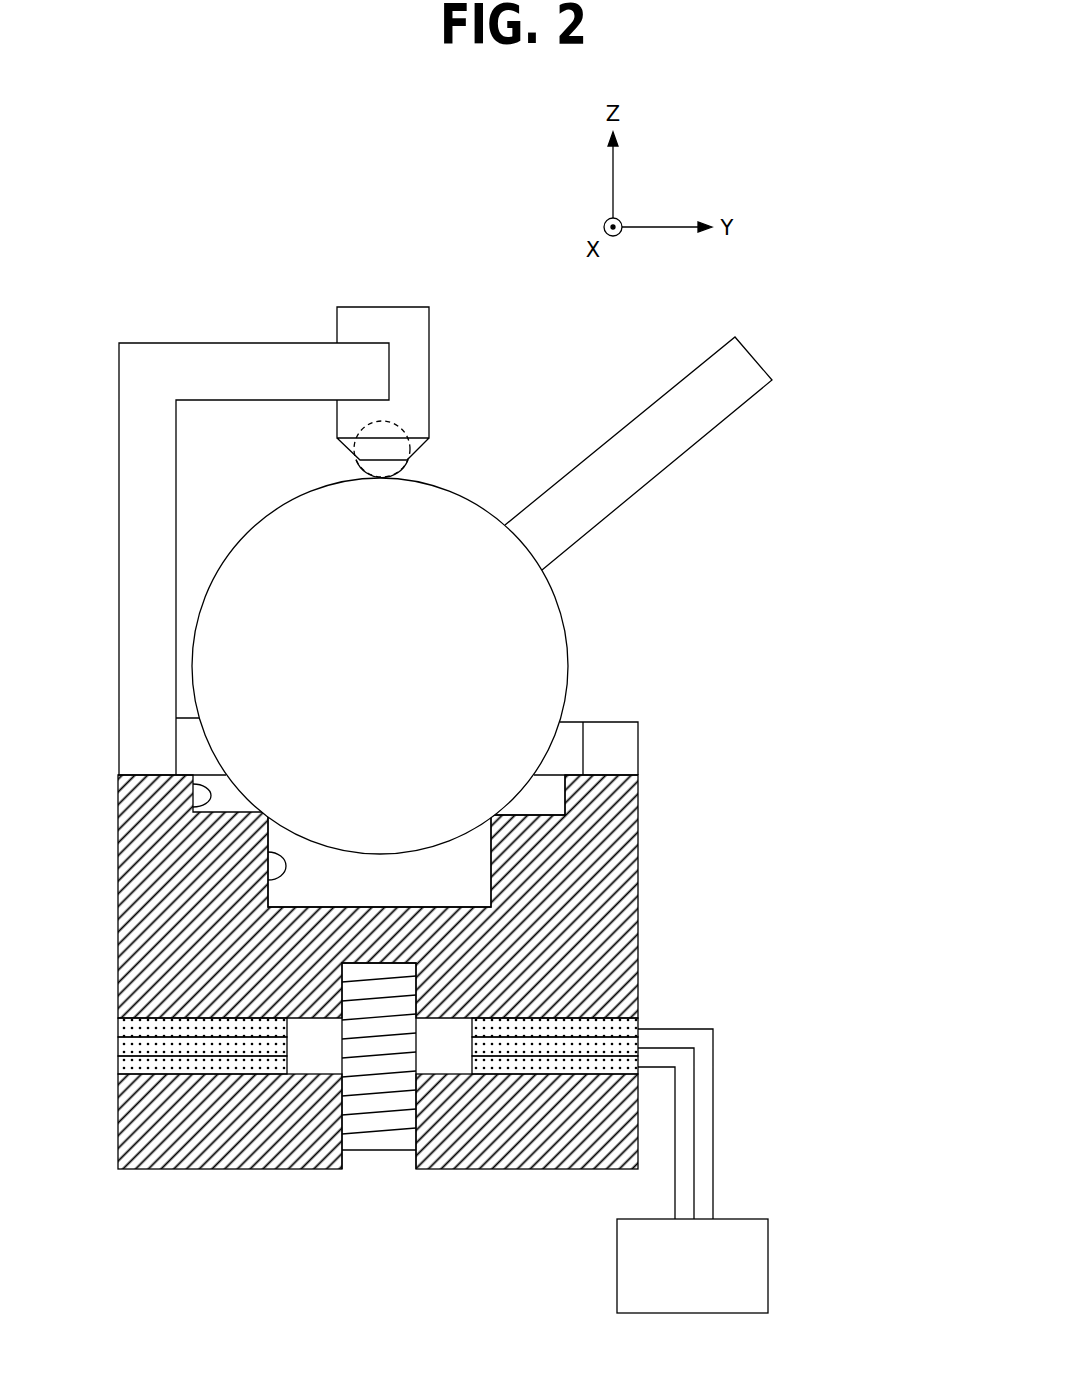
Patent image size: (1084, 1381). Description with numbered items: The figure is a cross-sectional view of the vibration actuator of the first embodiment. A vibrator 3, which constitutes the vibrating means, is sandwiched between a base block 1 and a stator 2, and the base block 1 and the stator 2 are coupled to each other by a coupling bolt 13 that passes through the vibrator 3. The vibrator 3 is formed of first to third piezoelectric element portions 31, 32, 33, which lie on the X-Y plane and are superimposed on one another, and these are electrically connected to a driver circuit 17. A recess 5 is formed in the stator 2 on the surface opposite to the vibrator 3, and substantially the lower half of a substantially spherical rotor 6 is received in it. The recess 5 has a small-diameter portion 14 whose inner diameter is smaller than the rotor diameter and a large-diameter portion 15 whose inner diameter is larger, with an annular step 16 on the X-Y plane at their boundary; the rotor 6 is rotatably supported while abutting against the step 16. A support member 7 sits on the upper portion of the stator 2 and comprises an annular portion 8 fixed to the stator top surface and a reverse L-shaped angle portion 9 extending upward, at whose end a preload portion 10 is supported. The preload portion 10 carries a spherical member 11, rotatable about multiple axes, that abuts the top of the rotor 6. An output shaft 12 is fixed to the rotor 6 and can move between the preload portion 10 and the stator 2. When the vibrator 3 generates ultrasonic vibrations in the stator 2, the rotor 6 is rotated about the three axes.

The base block 1 is at (118, 1128).
The stator 2 is at (638, 870).
The vibrator 3 is at (648, 1020).
The recess 5 is at (472, 888).
The rotor 6 is at (587, 630).
The support member 7 is at (96, 627).
The annular portion 8 is at (638, 745).
The angle portion 9 is at (119, 419).
The preload portion 10 is at (392, 307).
The spherical member 11 is at (405, 470).
The output shaft 12 is at (660, 472).
The coupling bolt 13 is at (377, 1150).
The small-diameter portion 14 is at (268, 880).
The large-diameter portion 15 is at (193, 807).
The step 16 is at (490, 813).
The driver circuit 17 is at (745, 1218).
The first piezoelectric element portion 31 is at (118, 1023).
The second piezoelectric element portion 32 is at (118, 1045).
The third piezoelectric element portion 33 is at (118, 1065).